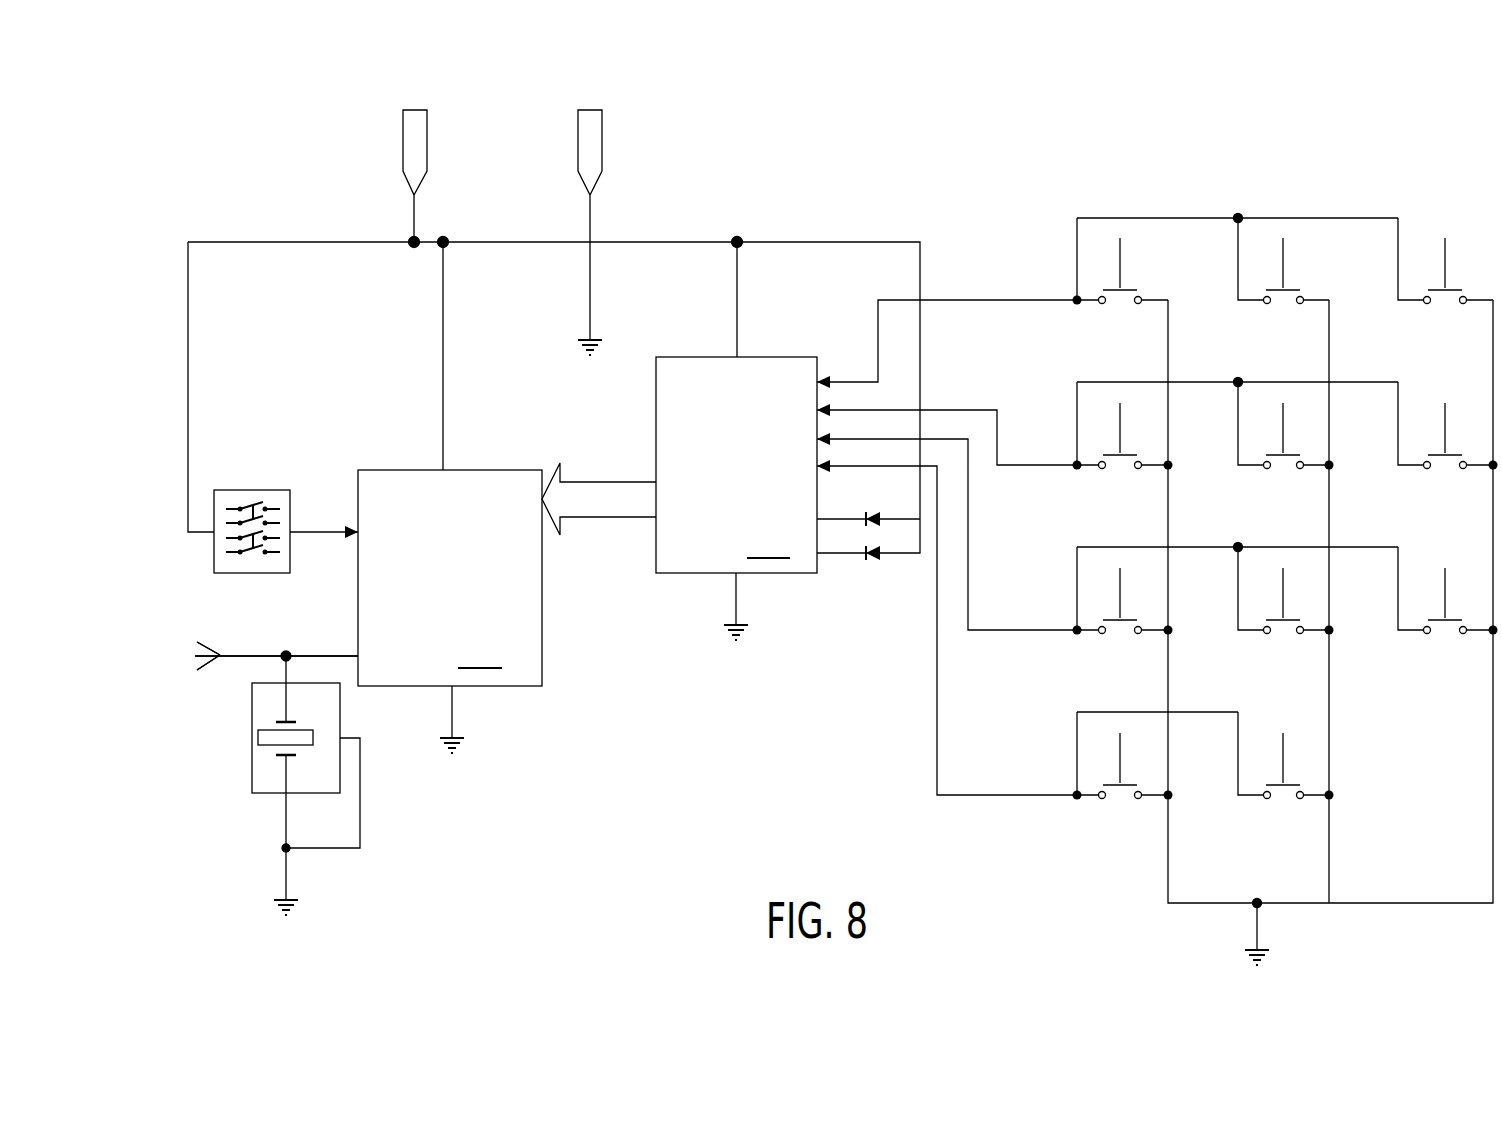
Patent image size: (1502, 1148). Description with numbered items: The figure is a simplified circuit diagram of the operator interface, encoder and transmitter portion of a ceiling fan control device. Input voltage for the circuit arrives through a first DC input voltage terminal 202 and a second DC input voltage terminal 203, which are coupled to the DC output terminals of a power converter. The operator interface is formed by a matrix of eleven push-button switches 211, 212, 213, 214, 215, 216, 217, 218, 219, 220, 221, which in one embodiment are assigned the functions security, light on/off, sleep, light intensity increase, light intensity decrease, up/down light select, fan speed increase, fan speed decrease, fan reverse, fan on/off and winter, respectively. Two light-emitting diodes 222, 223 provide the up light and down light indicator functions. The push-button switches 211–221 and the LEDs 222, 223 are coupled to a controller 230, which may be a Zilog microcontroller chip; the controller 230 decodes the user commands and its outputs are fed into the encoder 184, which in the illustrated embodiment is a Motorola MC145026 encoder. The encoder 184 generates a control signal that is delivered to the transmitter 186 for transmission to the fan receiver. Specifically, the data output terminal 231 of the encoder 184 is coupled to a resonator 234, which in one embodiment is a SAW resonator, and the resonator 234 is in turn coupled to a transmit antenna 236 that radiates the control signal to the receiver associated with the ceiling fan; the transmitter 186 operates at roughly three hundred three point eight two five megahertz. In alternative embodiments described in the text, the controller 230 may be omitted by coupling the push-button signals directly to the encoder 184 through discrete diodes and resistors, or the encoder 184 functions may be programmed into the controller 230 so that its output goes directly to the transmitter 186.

The encoder 184 is at (450, 578).
The transmitter 186 is at (373, 880).
The first DC input voltage terminal 202 is at (410, 148).
The second DC input voltage terminal 203 is at (595, 153).
The push-button switch 211 is at (1118, 303).
The push-button switch 212 is at (1118, 468).
The push-button switch 213 is at (1118, 633).
The push-button switch 214 is at (1118, 798).
The push-button switch 215 is at (1290, 303).
The push-button switch 216 is at (1290, 468).
The push-button switch 217 is at (1290, 633).
The push-button switch 218 is at (1290, 798).
The push-button switch 219 is at (1448, 303).
The push-button switch 220 is at (1448, 468).
The push-button switch 221 is at (1448, 633).
The light-emitting diode 222 is at (855, 555).
The light-emitting diode 223 is at (903, 517).
The controller 230 is at (736, 465).
The data output terminal 231 is at (338, 655).
The resonator 234 is at (248, 489).
The transmit antenna 236 is at (215, 662).